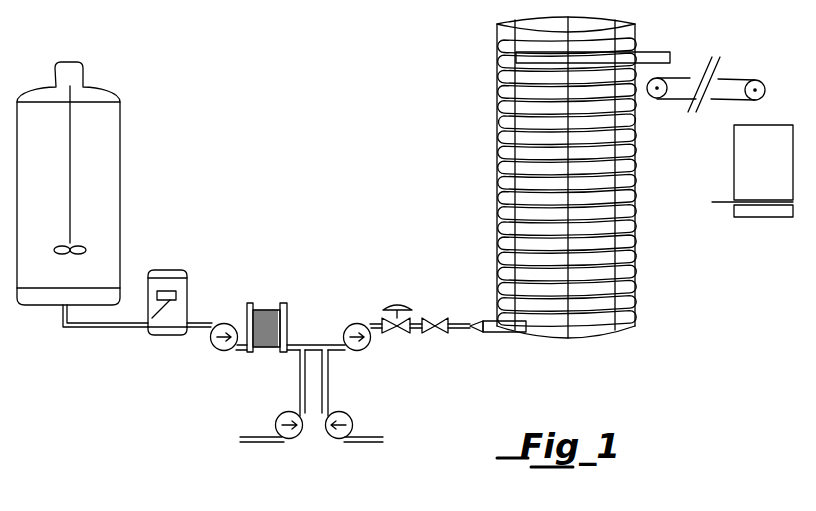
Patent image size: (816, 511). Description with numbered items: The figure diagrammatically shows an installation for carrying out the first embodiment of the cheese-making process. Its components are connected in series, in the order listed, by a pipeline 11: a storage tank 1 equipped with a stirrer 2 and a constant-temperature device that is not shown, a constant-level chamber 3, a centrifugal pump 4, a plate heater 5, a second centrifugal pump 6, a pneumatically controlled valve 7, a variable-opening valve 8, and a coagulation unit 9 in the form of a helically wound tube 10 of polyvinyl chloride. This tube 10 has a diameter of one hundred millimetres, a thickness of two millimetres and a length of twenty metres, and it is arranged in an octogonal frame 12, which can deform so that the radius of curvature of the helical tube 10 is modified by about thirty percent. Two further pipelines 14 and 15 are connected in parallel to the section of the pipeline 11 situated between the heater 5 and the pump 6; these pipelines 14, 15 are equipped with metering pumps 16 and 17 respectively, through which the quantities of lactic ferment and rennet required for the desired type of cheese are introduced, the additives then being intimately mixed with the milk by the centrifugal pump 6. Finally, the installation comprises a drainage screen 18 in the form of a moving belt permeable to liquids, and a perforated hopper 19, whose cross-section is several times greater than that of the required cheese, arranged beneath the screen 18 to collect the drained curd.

The storage tank 1 is at (121, 190).
The stirrer 2 is at (70, 224).
The constant-level chamber 3 is at (168, 270).
The centrifugal pump 4 is at (225, 351).
The plate heater 5 is at (265, 310).
The centrifugal pump 6 is at (366, 346).
The pneumatically controlled valve 7 is at (397, 305).
The variable-opening valve 8 is at (435, 318).
The coagulation unit 9 is at (602, 283).
The helically wound tube 10 is at (519, 333).
The pipeline 11 is at (110, 328).
The octogonal frame 12 is at (497, 30).
The pipeline 14 is at (300, 378).
The pipeline 15 is at (329, 378).
The metering pump 16 is at (289, 440).
The metering pump 17 is at (339, 440).
The drainage screen 18 is at (737, 78).
The perforated hopper 19 is at (734, 150).